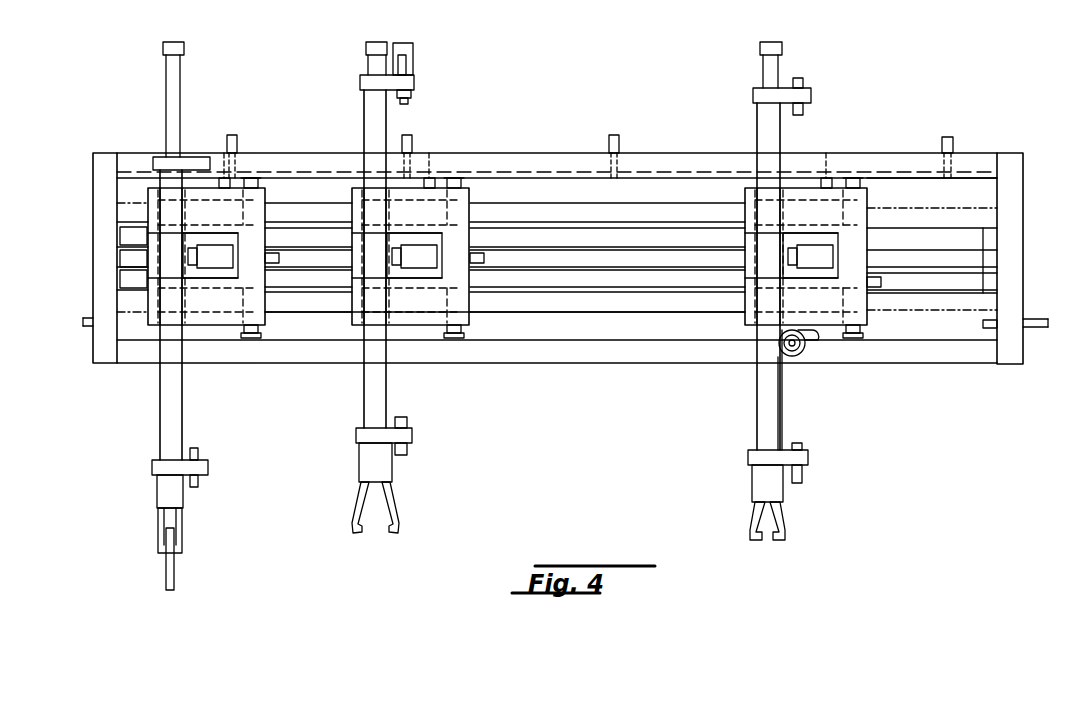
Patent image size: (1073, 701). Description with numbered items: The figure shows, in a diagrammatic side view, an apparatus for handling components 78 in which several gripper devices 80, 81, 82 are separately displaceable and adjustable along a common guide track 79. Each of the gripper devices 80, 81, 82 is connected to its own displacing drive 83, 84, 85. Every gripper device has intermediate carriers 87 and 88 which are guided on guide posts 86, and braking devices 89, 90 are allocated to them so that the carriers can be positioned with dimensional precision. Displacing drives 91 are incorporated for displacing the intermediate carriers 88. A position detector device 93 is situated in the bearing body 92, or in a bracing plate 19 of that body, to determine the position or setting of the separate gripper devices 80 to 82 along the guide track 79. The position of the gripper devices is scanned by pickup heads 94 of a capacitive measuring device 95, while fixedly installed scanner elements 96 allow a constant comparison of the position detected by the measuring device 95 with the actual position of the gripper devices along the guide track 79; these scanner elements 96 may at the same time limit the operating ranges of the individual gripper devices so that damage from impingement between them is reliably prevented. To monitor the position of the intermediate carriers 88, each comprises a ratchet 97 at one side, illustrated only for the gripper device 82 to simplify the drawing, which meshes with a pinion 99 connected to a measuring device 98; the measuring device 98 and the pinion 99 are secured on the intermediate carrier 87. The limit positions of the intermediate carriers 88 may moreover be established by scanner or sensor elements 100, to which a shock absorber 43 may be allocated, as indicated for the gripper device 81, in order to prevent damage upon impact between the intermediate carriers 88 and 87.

The bracing plate 19 is at (877, 152).
The shock absorber 43 is at (406, 55).
The component 78 is at (174, 573).
The guide track 79 is at (582, 320).
The gripper device 80 is at (190, 532).
The gripper device 81 is at (402, 503).
The gripper device 82 is at (792, 512).
The displacing drive 83 is at (134, 236).
The displacing drive 84 is at (134, 258).
The displacing drive 85 is at (134, 277).
The guide post 86 is at (666, 214).
The intermediate carrier 87 is at (270, 192).
The intermediate carrier 88 is at (192, 400).
The braking device 89 is at (218, 262).
The braking device 90 is at (252, 178).
The displacing drive 91 is at (178, 48).
The bearing body 92 is at (1004, 162).
The position detector device 93 is at (524, 176).
The pickup head 94 is at (225, 178).
The capacitive measuring device 95 is at (935, 178).
The scanner element 96 is at (233, 135).
The ratchet 97 is at (785, 414).
The measuring device 98 is at (803, 348).
The pinion 99 is at (808, 348).
The scanner or sensor element 100 is at (405, 66).